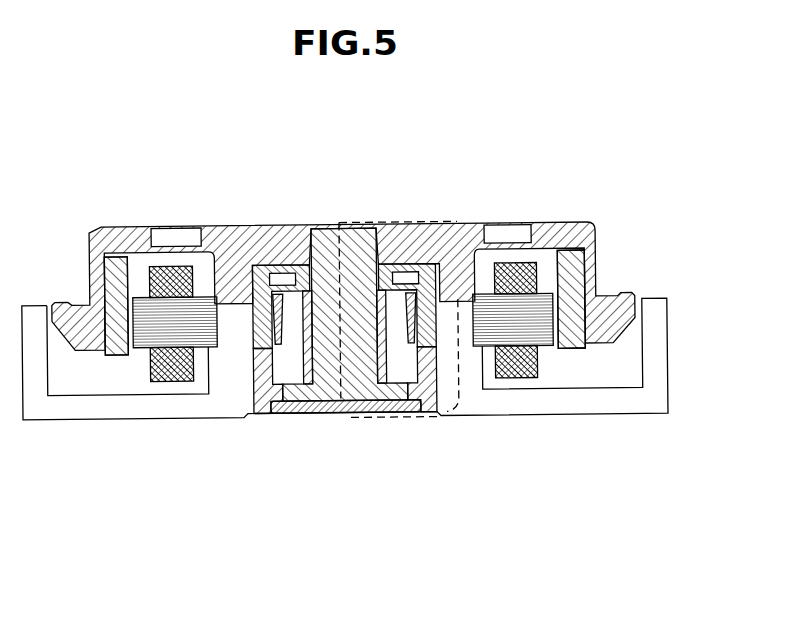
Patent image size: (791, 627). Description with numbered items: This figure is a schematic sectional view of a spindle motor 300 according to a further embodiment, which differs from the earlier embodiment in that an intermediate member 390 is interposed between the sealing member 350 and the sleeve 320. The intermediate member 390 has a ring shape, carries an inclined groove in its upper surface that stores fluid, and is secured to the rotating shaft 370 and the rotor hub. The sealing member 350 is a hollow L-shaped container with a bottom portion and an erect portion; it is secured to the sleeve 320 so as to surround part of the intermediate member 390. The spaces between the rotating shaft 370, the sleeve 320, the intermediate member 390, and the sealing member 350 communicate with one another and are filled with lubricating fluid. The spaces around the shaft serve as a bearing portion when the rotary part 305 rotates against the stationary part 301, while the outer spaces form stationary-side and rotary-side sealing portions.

The spindle motor 300 is at (120, 131).
The stationary part 301 is at (657, 468).
The rotary part 305 is at (580, 172).
The intermediate member 390 is at (280, 288).
The rotating shaft 370 is at (327, 236).
The sealing member 350 is at (262, 412).
The sleeve 320 is at (428, 412).